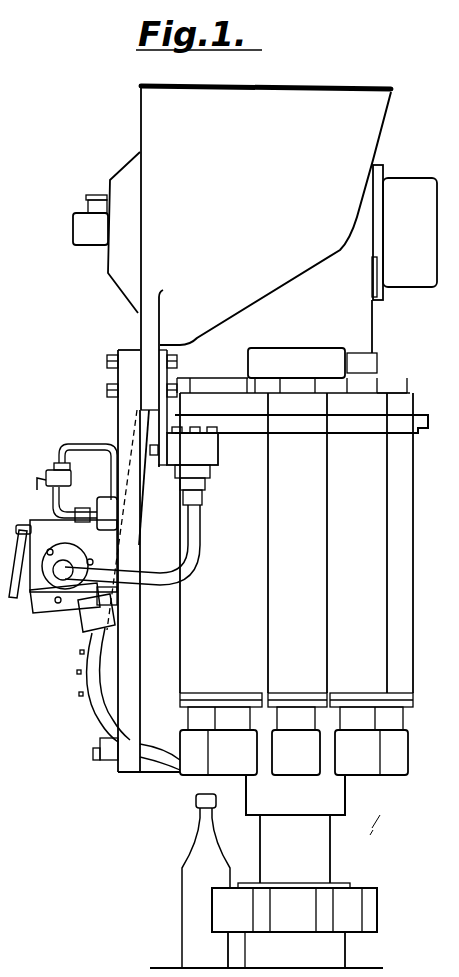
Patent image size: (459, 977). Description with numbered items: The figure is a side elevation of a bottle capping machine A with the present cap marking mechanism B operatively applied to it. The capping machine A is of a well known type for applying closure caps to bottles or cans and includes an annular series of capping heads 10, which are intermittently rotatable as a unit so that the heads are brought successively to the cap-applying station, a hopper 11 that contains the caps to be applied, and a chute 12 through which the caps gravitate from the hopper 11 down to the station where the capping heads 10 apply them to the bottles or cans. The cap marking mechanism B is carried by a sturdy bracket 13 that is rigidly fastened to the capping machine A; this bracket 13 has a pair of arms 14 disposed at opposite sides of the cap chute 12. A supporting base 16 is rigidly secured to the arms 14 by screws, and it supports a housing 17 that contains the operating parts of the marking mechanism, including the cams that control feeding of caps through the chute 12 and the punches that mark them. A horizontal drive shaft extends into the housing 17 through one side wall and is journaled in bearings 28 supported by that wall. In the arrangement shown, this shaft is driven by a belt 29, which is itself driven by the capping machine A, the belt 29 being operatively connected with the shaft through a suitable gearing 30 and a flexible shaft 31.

The capping heads 10 is at (393, 770).
The hopper 11 is at (157, 107).
The chute 12 is at (100, 700).
The bracket 13 is at (128, 378).
The arms 14 is at (130, 683).
The supporting base 16 is at (112, 616).
The housing 17 is at (40, 598).
The bearings 28 is at (455, 459).
The belt 29 is at (348, 420).
The gearing 30 is at (207, 453).
The flexible shaft 31 is at (192, 552).
The capping machine A is at (420, 644).
The cap marking mechanism B is at (43, 520).